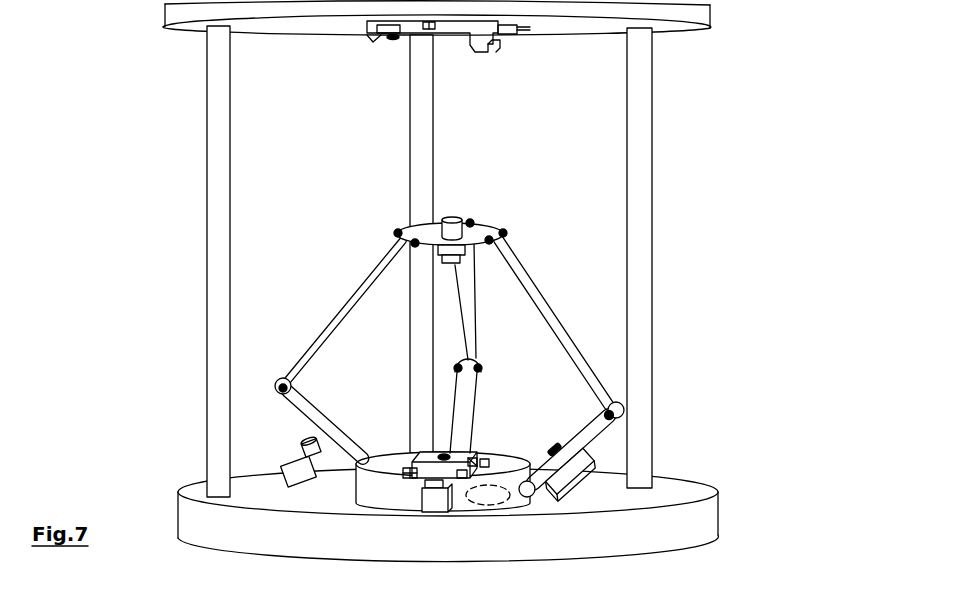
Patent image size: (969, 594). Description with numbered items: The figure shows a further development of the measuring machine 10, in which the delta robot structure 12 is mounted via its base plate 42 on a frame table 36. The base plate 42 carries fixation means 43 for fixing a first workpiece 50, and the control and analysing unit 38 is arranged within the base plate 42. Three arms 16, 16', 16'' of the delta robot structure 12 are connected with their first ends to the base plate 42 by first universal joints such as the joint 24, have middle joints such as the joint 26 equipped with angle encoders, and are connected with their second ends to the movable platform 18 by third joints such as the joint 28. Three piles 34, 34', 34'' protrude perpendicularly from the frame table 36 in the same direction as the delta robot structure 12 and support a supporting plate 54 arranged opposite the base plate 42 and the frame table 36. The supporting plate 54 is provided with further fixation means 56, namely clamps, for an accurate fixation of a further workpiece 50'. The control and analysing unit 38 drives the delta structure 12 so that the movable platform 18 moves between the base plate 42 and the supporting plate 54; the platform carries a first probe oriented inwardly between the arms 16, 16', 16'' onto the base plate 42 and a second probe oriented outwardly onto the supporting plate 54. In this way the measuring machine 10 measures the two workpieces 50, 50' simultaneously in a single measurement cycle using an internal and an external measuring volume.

The measuring machine 10 is at (705, 149).
The delta robot structure 12 is at (550, 207).
The arm 16 is at (633, 365).
The arm 16' is at (491, 348).
The arm 16'' is at (341, 345).
The movable platform 18 is at (471, 190).
The first universal joint 24 is at (547, 478).
The middle joint 26 is at (625, 409).
The third joint 28 is at (492, 239).
The pile 34 is at (700, 258).
The pile 34' is at (376, 244).
The pile 34'' is at (166, 261).
The frame table 36 is at (596, 549).
The control and analysing unit 38 is at (500, 488).
The base plate 42 is at (495, 463).
The fixation means 43 is at (408, 470).
The workpiece 50 is at (439, 442).
The further workpiece 50' is at (407, 61).
The supporting plate 54 is at (318, 28).
The further fixation means 56 is at (510, 33).